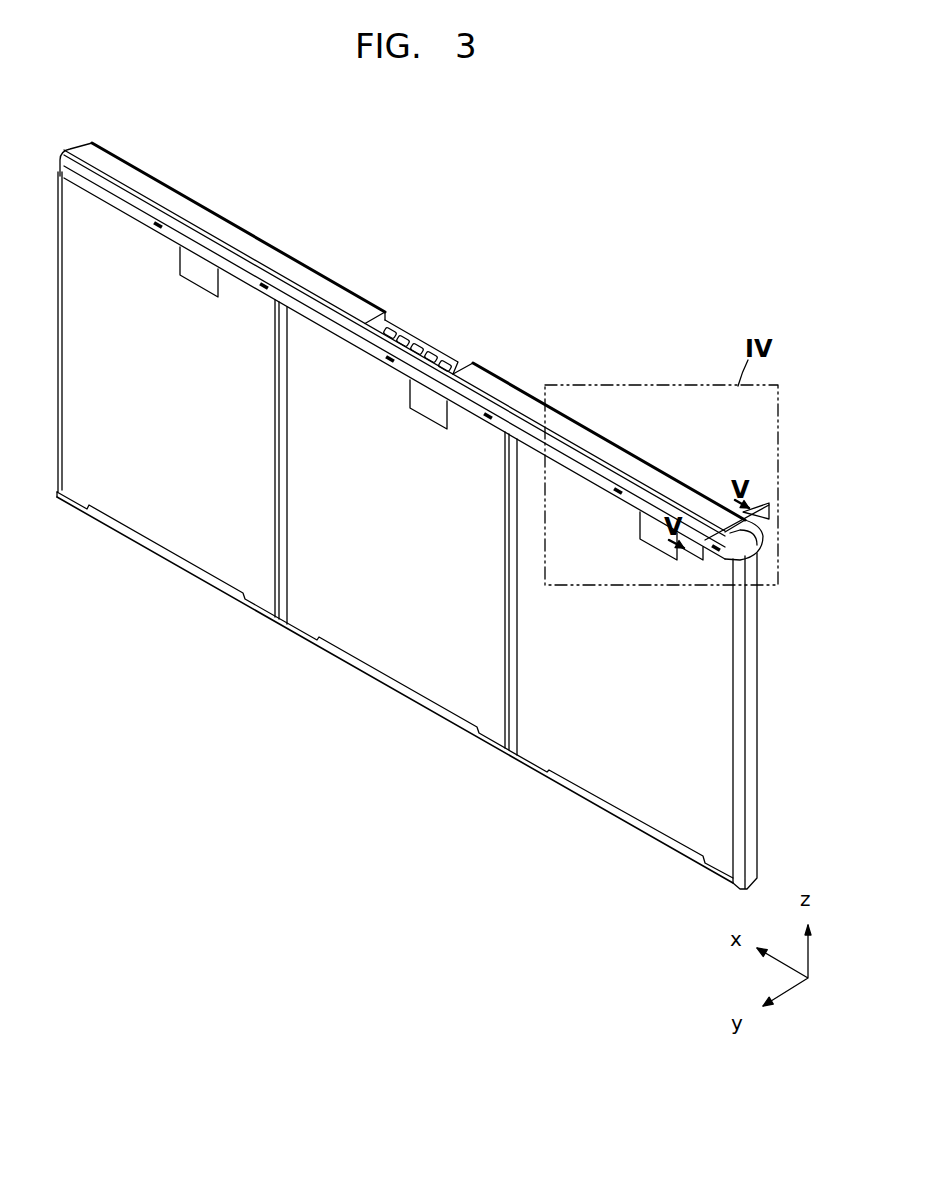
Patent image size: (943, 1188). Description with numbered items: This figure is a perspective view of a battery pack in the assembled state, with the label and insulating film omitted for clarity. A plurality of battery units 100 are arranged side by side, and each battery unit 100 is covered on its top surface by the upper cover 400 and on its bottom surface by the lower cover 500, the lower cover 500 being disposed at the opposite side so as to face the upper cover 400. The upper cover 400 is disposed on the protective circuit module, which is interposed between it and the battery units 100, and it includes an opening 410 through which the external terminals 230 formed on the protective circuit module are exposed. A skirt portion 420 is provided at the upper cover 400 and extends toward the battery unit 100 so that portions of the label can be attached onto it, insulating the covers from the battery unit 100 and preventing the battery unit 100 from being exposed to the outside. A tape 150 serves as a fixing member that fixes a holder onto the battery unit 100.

The battery unit 100 is at (167, 500).
The tape 150 is at (657, 544).
The external terminal 230 is at (428, 350).
The upper cover 400 is at (520, 378).
The opening 410 is at (388, 328).
The skirt portion 420 is at (300, 307).
The lower cover 500 is at (668, 845).